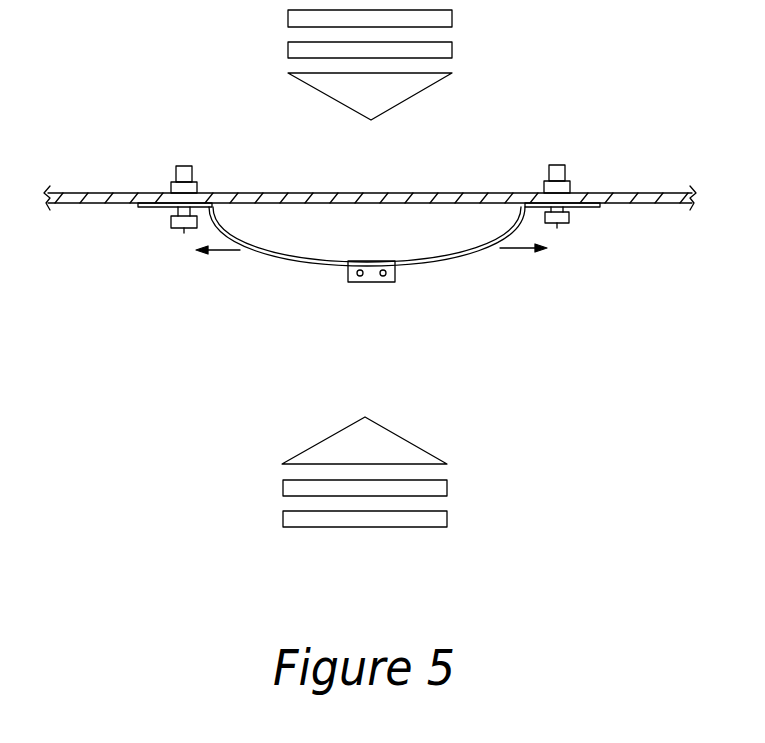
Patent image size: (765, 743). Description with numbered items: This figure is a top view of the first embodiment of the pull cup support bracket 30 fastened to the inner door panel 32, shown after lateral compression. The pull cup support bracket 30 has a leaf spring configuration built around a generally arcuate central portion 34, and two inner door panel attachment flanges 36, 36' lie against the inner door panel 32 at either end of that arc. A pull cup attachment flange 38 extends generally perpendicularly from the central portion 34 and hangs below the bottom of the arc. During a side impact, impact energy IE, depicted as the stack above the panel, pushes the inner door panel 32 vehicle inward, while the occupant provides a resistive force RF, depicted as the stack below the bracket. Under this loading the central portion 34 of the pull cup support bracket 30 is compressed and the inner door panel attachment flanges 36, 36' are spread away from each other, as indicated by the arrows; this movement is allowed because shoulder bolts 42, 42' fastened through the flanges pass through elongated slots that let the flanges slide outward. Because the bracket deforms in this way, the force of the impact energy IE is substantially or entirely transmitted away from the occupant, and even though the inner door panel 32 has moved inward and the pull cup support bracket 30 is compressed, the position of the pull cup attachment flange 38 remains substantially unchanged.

The impact energy IE is at (410, 97).
The resistive force RF is at (323, 442).
The inner door panel 32 is at (308, 193).
The inner door panel attachment flange 36 is at (142, 233).
The inner door panel attachment flange 36' is at (599, 233).
The shoulder bolt 42 is at (160, 225).
The shoulder bolt 42' is at (584, 224).
The pull cup support bracket 30 is at (296, 263).
The central portion 34 is at (450, 258).
The pull cup attachment flange 38 is at (373, 284).